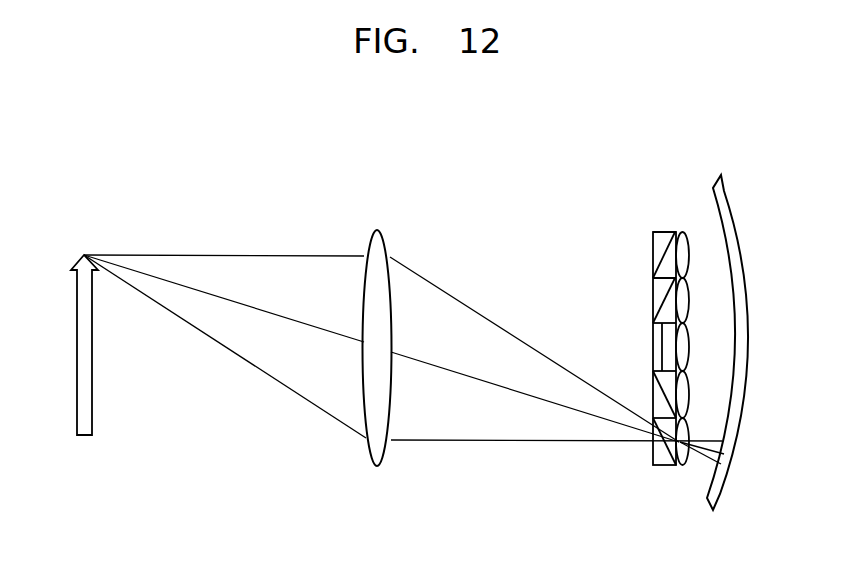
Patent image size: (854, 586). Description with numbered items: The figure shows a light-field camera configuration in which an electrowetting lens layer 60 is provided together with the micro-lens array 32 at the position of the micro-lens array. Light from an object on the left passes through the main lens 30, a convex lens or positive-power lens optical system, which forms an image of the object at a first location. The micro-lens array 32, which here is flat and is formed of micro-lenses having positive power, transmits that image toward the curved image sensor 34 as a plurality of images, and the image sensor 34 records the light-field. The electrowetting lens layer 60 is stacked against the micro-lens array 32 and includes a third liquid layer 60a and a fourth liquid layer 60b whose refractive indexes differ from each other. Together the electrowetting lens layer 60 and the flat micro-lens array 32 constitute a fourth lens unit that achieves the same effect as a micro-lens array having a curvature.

The main lens 30 is at (377, 230).
The micro-lens array 32 is at (683, 231).
The image sensor 34 is at (722, 182).
The electrowetting lens layer 60 is at (625, 320).
The third liquid layer 60a is at (668, 272).
The fourth liquid layer 60b is at (658, 238).